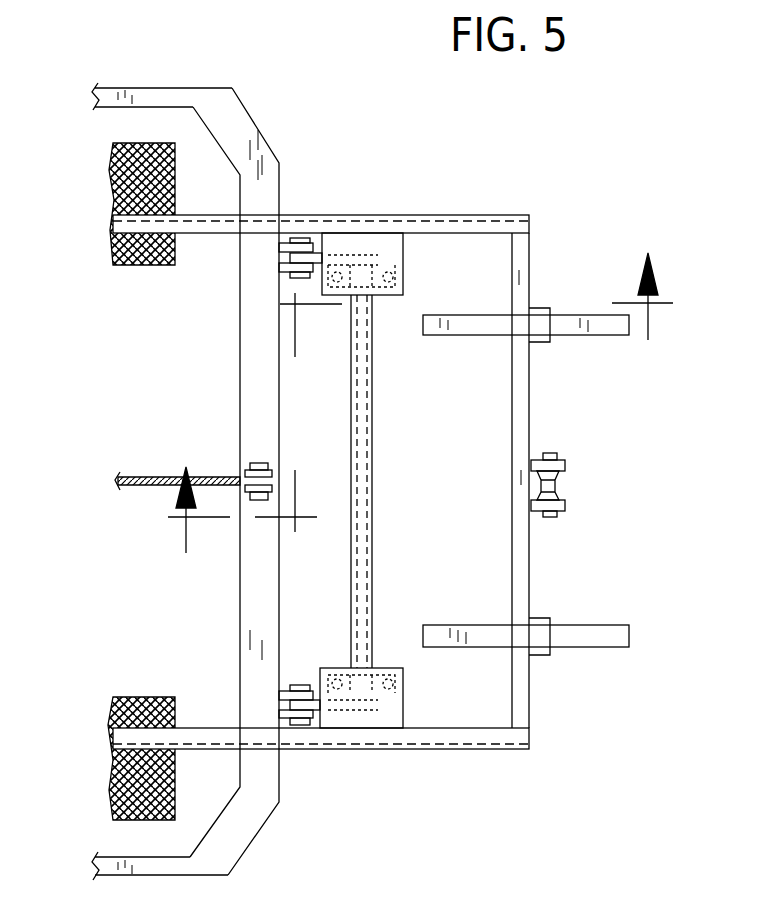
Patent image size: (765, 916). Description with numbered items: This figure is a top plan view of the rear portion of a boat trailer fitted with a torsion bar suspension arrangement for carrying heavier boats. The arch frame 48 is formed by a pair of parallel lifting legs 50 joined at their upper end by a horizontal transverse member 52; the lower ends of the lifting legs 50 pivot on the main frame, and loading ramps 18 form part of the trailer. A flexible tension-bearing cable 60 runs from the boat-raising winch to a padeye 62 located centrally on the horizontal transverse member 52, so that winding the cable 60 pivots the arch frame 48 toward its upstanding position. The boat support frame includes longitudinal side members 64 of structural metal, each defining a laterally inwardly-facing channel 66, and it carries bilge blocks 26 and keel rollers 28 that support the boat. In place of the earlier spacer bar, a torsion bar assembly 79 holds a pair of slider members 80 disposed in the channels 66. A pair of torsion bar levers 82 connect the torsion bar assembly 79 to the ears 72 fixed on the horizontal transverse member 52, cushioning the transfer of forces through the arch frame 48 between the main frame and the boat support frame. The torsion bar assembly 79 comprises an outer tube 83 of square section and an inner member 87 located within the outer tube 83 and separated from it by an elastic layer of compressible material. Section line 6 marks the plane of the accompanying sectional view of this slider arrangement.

The section line 6- 6 is at (417, 404).
The loading ramps 18 is at (143, 265).
The bilge blocks 26 is at (572, 315).
The keel rollers 28 is at (560, 487).
The arch frame 48 is at (250, 840).
The lifting legs 50 is at (140, 95).
The horizontal transverse member 52 is at (272, 418).
The flexible tension-bearing cable 60 is at (163, 477).
The padeye 62 is at (255, 465).
The longitudinal side members 64 is at (370, 215).
The channel 66 is at (482, 240).
The ears 72 is at (297, 280).
The torsion bar assembly 79 is at (373, 317).
The slider members 80 is at (403, 222).
The torsion bar levers 82 is at (317, 253).
The outer tube 83 is at (372, 395).
The inner member 87 is at (375, 440).